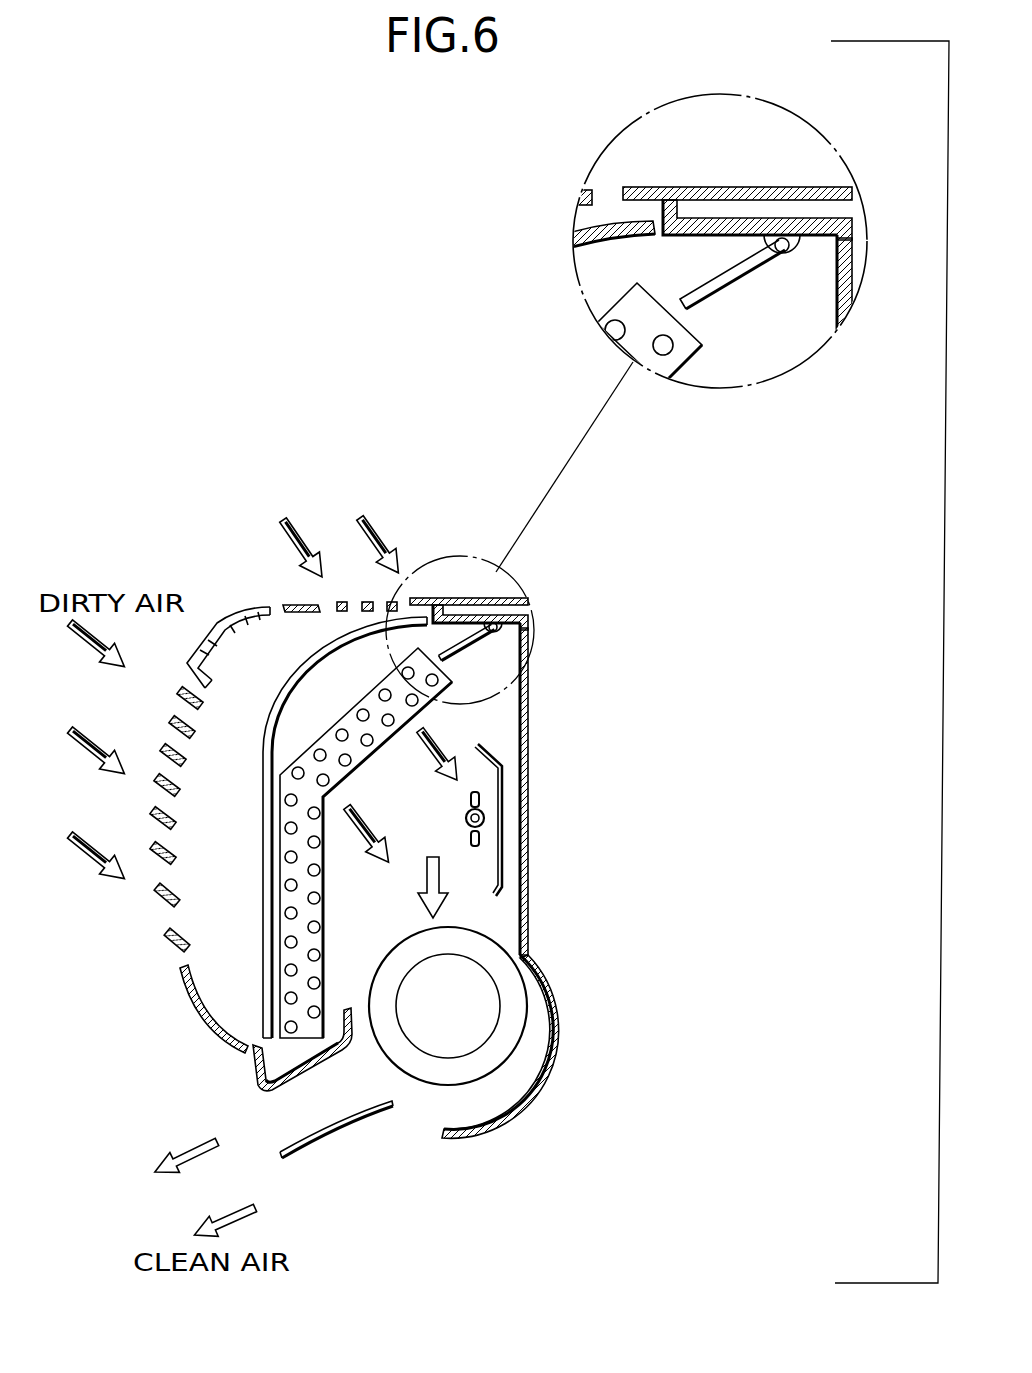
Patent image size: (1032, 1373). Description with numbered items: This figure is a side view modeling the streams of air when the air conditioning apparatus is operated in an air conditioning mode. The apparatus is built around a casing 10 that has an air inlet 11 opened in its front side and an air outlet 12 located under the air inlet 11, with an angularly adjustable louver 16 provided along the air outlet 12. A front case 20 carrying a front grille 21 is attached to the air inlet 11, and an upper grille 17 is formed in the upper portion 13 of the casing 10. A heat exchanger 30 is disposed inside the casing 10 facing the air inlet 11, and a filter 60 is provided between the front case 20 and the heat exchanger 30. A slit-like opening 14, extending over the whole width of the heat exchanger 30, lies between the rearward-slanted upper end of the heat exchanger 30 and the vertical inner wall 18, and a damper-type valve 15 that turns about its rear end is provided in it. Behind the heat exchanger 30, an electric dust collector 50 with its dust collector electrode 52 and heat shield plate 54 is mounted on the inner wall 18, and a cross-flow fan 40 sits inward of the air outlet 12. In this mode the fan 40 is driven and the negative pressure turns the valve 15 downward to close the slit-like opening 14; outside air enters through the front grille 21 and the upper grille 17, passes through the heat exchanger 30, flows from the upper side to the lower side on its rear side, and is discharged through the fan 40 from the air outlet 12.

The casing 10 is at (530, 722).
The air inlet 11 is at (205, 812).
The air outlet 12 is at (410, 1113).
The upper portion 13 is at (480, 598).
The slit-like opening 14 is at (446, 628).
The valve 15 is at (480, 658).
The louver 16 is at (316, 1150).
The upper grille 17 is at (352, 598).
The inner wall 18 is at (530, 925).
The front case 20 is at (197, 1012).
The front grille 21 is at (163, 908).
The heat exchanger 30 is at (285, 930).
The fan 40 is at (503, 1065).
The electric dust collector 50 is at (525, 822).
The dust collector electrode 52 is at (483, 825).
The heat shield plate 54 is at (503, 793).
The filter 60 is at (292, 690).